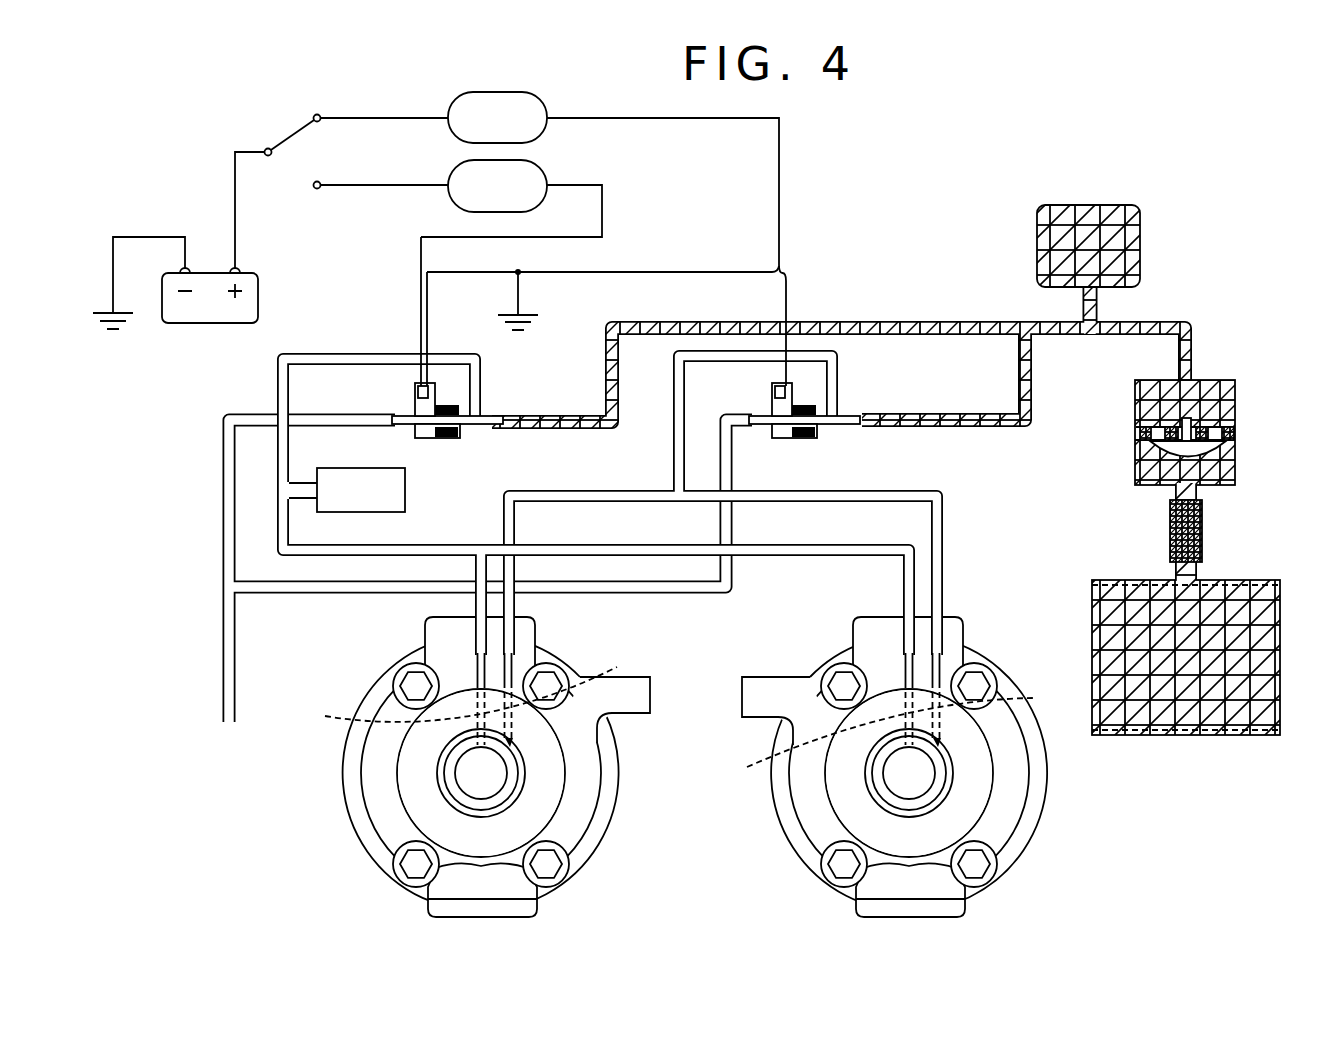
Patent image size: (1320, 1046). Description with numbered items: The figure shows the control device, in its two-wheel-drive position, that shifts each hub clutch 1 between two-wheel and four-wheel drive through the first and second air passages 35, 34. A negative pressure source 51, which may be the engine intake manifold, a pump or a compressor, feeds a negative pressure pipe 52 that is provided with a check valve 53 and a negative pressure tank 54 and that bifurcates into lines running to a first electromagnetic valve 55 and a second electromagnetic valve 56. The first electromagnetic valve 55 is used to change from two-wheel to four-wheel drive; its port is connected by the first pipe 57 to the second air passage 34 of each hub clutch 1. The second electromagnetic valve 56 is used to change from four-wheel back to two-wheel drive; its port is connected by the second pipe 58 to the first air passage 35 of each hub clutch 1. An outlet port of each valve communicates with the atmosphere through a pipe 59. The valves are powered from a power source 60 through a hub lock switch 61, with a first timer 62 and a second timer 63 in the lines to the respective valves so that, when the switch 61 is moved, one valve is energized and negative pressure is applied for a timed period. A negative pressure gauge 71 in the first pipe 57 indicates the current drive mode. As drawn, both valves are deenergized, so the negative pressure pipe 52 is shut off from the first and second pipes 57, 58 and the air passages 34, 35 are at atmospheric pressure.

The hub clutch 1 is at (350, 829).
The second air passage 34 is at (659, 720).
The first air passage 35 is at (791, 689).
The negative pressure source 51 is at (1187, 737).
The negative pressure pipe 52 is at (930, 322).
The check valve 53 is at (1135, 447).
The negative pressure tank 54 is at (1130, 237).
The first electromagnetic valve 55 is at (405, 380).
The second electromagnetic valve 56 is at (797, 372).
The first pipe 57 is at (307, 360).
The second pipe 58 is at (893, 490).
The pipe 59 is at (222, 527).
The power source 60 is at (205, 318).
The hub lock switch 61 is at (261, 144).
The first timer 62 is at (547, 174).
The second timer 63 is at (547, 106).
The negative pressure gauge 71 is at (348, 504).